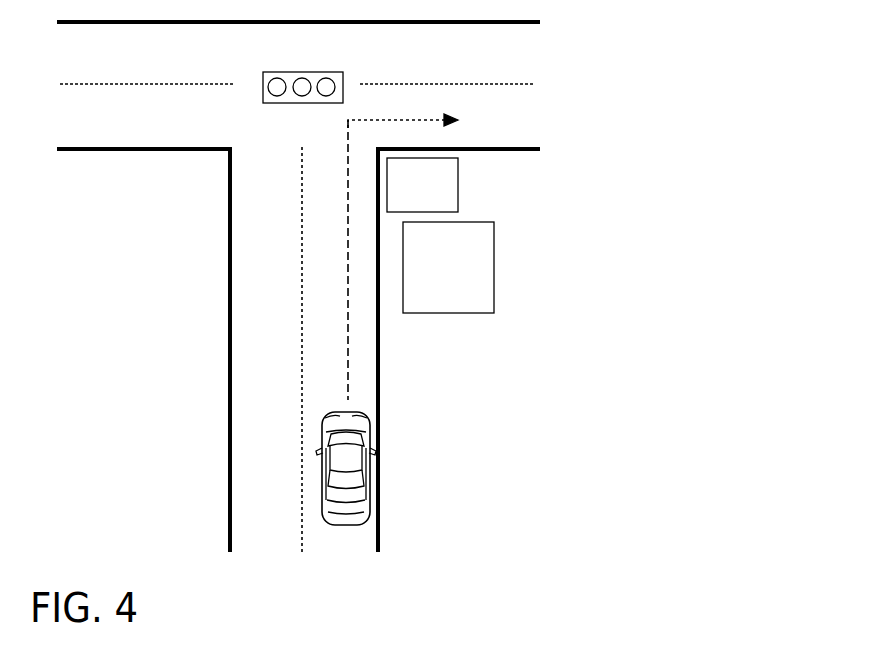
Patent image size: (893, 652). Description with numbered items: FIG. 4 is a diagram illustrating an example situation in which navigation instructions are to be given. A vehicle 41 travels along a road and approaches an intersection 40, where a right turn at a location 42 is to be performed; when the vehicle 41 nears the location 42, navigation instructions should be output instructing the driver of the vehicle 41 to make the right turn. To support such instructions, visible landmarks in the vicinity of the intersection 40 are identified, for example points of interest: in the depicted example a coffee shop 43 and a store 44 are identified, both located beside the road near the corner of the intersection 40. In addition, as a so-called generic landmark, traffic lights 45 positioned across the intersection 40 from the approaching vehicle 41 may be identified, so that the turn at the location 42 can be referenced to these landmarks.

The intersection 40 is at (186, 219).
The vehicle 41 is at (367, 477).
The location 42 is at (365, 120).
The coffee shop 43 is at (494, 285).
The store 44 is at (457, 200).
The traffic lights 45 is at (280, 72).